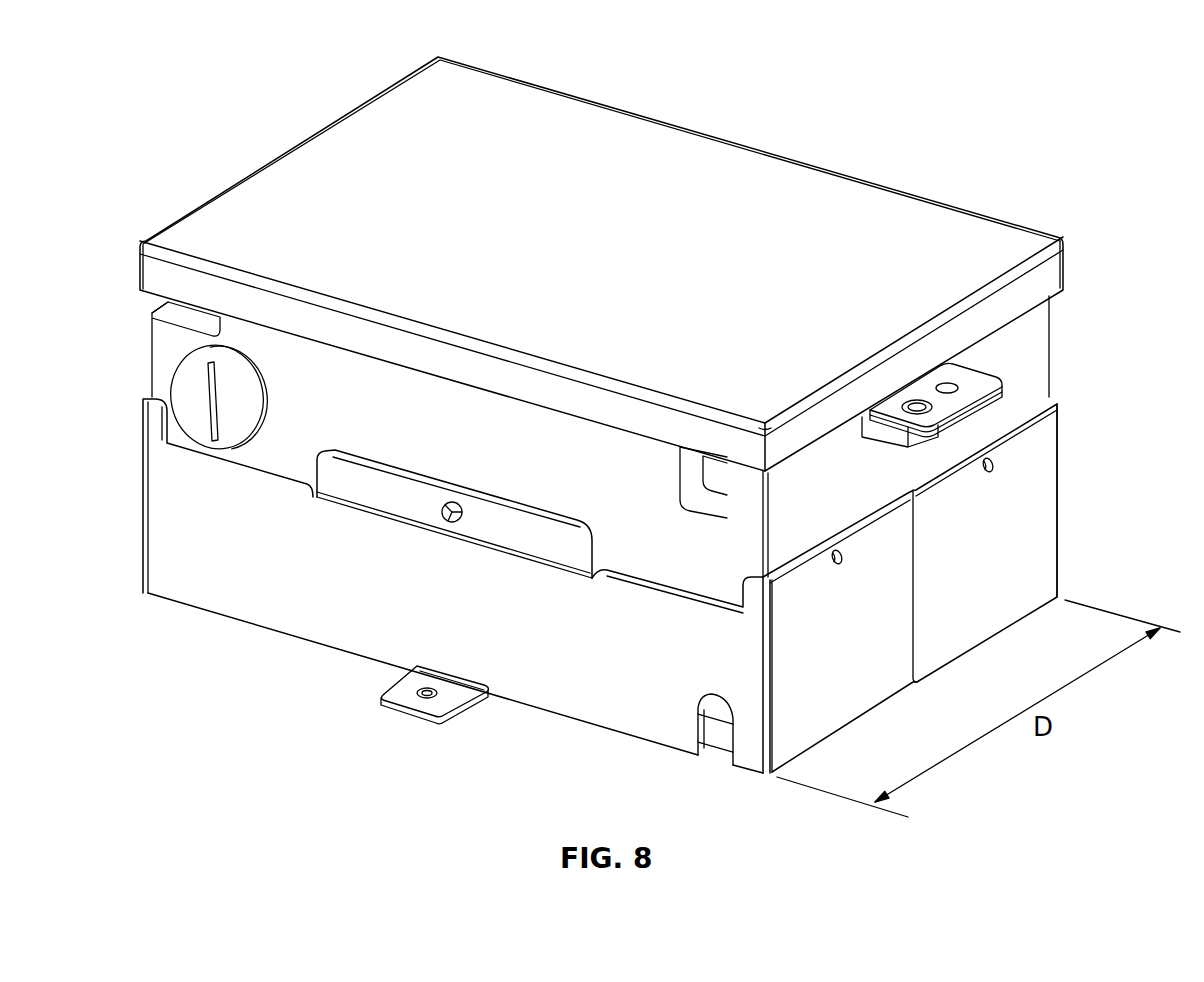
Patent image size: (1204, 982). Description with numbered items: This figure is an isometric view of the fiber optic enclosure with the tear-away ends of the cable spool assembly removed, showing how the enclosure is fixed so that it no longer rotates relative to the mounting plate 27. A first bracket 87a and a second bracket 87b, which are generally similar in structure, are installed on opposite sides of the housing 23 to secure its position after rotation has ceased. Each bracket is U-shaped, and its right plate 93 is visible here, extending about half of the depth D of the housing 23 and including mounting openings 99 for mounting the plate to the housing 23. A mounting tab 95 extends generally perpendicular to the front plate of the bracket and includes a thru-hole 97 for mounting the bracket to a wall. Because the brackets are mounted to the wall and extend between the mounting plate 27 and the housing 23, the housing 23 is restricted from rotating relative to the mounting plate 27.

The housing 23 is at (1066, 335).
The mounting plate 27 is at (718, 756).
The first bracket 87a is at (558, 690).
The second bracket 87b is at (1072, 455).
The right plate 93 is at (1042, 536).
The mounting tab 95 is at (397, 675).
The thru-hole 97 is at (430, 684).
The mounting openings 99 is at (993, 472).